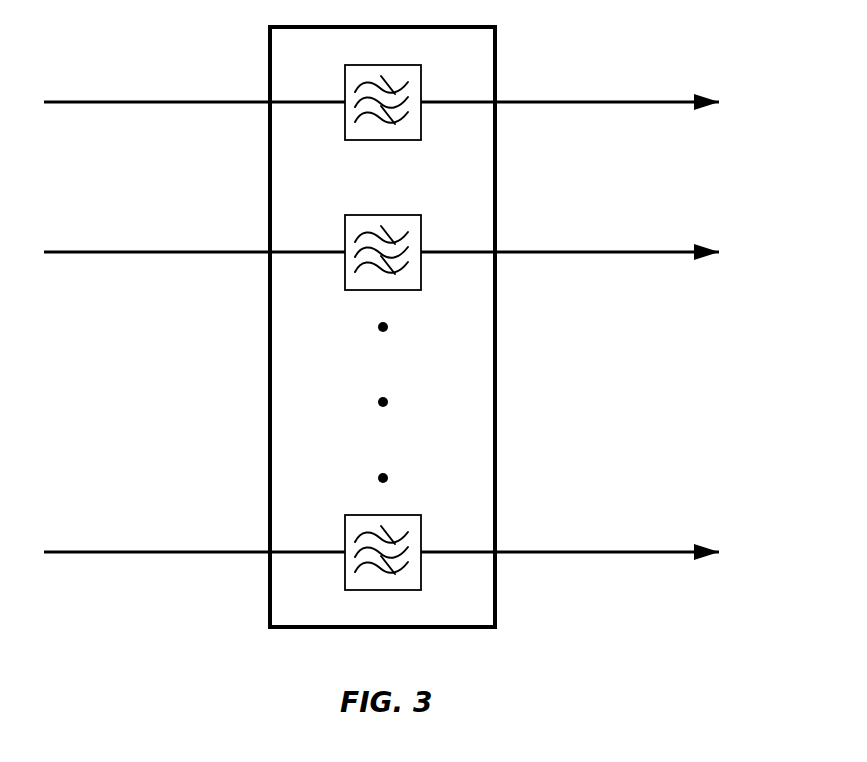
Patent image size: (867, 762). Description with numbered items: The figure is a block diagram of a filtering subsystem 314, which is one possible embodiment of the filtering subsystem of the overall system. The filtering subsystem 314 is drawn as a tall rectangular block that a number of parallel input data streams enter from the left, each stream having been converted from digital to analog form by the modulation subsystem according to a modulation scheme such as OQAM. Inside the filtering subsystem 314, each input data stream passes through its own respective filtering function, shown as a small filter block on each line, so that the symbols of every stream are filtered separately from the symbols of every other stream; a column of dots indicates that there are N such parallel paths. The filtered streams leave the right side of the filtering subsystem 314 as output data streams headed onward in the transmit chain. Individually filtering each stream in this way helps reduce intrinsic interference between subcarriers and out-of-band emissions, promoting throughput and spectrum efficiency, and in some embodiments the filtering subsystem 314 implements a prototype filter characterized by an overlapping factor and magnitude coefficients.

The filtering subsystem 314 is at (314, 55).